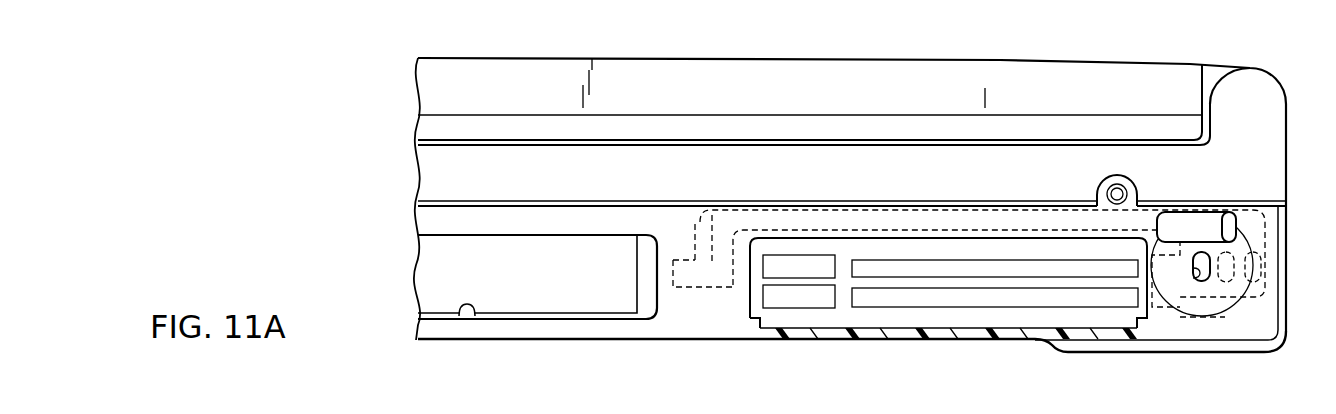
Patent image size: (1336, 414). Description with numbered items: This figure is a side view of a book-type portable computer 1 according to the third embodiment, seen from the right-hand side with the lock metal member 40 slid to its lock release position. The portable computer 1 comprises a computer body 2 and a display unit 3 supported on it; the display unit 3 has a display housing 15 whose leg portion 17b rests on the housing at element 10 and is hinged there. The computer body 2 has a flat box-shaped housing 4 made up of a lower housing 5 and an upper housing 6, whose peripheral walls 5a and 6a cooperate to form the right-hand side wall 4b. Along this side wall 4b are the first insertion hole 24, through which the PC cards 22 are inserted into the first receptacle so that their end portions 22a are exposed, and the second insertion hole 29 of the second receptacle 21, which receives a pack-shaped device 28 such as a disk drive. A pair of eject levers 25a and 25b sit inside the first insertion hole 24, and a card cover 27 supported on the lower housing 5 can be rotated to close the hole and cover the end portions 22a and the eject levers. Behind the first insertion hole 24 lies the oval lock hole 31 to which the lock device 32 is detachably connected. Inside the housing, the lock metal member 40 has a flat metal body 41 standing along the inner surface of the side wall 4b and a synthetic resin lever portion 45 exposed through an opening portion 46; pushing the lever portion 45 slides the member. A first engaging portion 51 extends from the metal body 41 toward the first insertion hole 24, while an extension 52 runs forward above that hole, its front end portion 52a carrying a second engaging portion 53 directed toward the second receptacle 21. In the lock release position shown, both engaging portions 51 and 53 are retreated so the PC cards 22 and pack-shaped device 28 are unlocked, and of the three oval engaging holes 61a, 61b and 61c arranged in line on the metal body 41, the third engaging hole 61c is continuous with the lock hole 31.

The portable computer 1 is at (1045, 56).
The computer body 2 is at (408, 329).
The display unit 3 is at (432, 97).
The housing 4 is at (365, 172).
The side wall 4b is at (605, 215).
The lower housing 5 is at (437, 221).
The peripheral wall 5a is at (877, 218).
The upper housing 6 is at (437, 183).
The peripheral wall 6a is at (692, 157).
The hinge cover 10 is at (1265, 99).
The display housing 15 is at (525, 80).
The leg portion 17b is at (1213, 75).
The second receptacle 21 is at (556, 320).
The PC card 22 is at (1018, 290).
The end portion 22a is at (998, 268).
The first insertion hole 24 is at (905, 243).
The eject lever 25a is at (778, 265).
The eject lever 25b is at (793, 297).
The card cover 27 is at (1040, 342).
The pack-shaped device 28 is at (440, 270).
The second insertion hole 29 is at (470, 318).
The lock hole 31 is at (1196, 281).
The lock device 32 is at (1223, 320).
The lock metal member 40 is at (1268, 243).
The metal body 41 is at (1268, 222).
The lever portion 45 is at (1226, 214).
The opening portion 46 is at (1172, 218).
The first engaging portion 51 is at (1127, 330).
The extension 52 is at (822, 218).
The front end portion 52a is at (714, 212).
The second engaging portion 53 is at (673, 290).
The first engaging hole 61a is at (1253, 306).
The second engaging hole 61b is at (1260, 277).
The third engaging hole 61c is at (1200, 290).